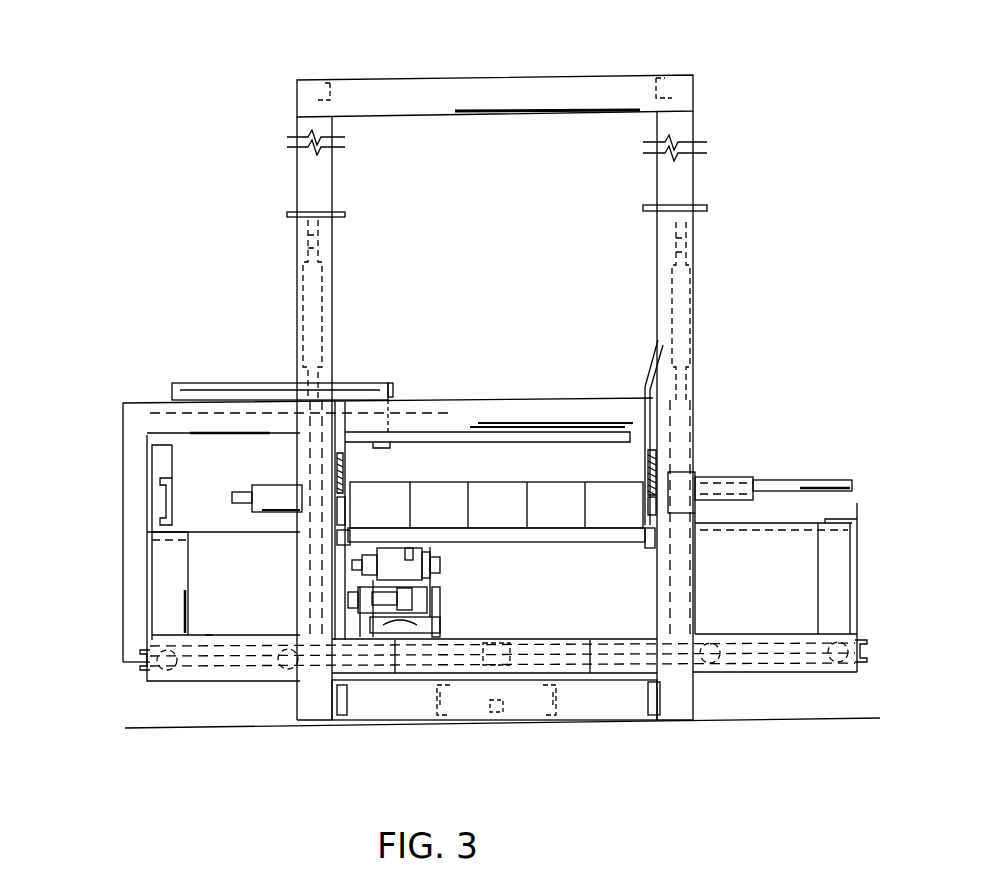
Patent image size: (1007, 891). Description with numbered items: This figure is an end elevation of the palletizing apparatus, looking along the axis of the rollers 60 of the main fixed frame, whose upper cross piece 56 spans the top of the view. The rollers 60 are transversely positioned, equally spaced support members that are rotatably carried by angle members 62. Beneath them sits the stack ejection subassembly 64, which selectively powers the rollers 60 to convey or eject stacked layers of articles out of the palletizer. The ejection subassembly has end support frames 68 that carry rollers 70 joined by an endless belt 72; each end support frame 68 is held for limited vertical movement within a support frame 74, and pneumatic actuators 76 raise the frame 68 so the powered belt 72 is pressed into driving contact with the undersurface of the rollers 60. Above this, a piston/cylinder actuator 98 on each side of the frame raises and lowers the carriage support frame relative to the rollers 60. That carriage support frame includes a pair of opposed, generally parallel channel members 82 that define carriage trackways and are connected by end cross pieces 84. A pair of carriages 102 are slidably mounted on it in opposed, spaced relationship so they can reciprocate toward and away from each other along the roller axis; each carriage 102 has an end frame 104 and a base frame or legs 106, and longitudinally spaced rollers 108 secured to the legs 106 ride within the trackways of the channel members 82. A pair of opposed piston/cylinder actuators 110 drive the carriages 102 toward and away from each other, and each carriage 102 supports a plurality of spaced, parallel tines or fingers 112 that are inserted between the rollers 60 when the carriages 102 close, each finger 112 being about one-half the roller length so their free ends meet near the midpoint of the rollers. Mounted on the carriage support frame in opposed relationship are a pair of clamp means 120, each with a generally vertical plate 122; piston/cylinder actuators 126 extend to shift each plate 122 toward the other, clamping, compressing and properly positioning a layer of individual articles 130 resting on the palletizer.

The upper cross piece 56 is at (498, 80).
The piston/cylinder actuator 98 is at (303, 312).
The end frame 104 is at (123, 480).
The carriage 102 is at (160, 561).
The vertical plate 122 is at (347, 421).
The articles 130 is at (546, 488).
The clamp means 120 is at (657, 428).
The piston/cylinder actuator 126 is at (273, 480).
The rollers 60 is at (522, 541).
The angle members 62 is at (380, 560).
The rollers 70 is at (405, 552).
The endless belt 72 is at (430, 551).
The end support frame 68 is at (434, 582).
The stack ejection subassembly 64 is at (505, 601).
The pneumatic actuator 76 is at (395, 625).
The support frame 74 is at (440, 628).
The channel member 82 is at (755, 672).
The piston/cylinder actuator 110 is at (393, 657).
The rollers 108 is at (163, 652).
The base frame or legs 106 is at (208, 633).
The end cross piece 84 is at (143, 672).
The tines or fingers 112 is at (775, 525).